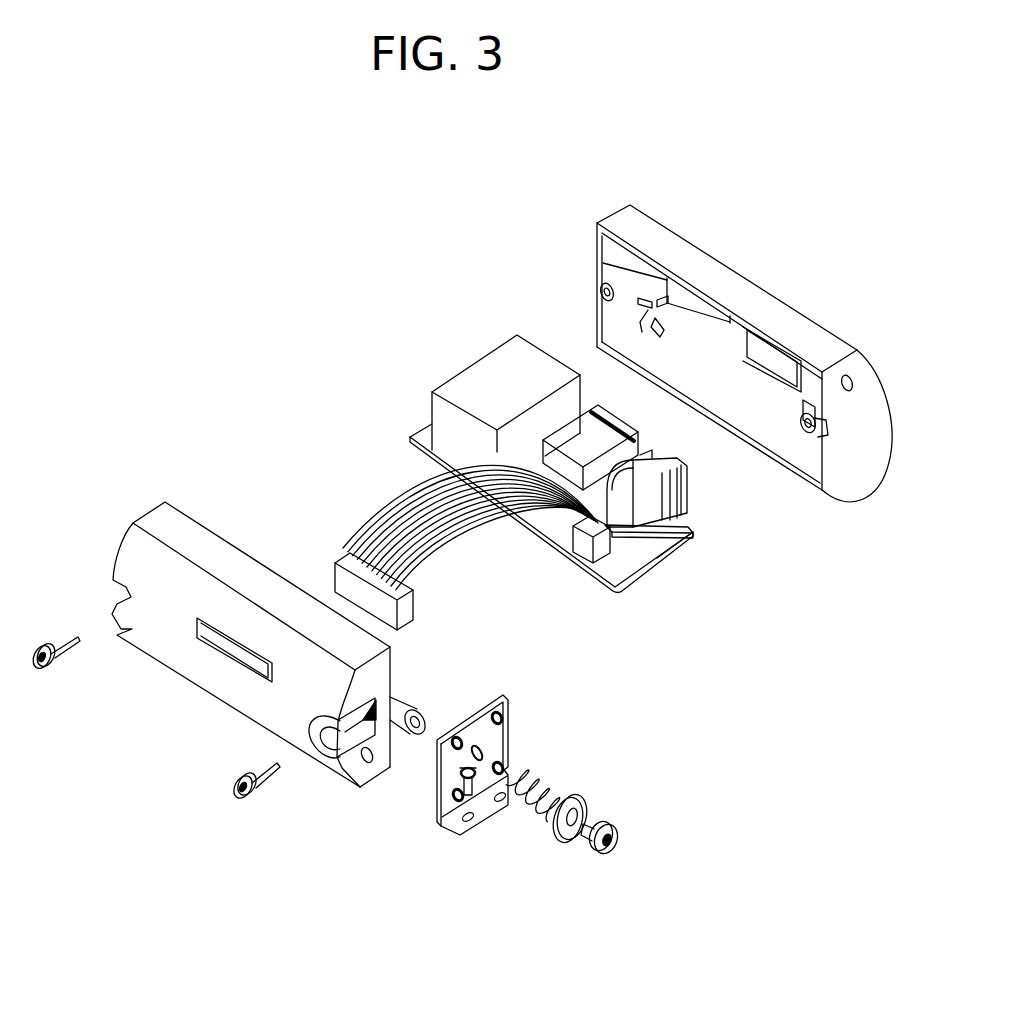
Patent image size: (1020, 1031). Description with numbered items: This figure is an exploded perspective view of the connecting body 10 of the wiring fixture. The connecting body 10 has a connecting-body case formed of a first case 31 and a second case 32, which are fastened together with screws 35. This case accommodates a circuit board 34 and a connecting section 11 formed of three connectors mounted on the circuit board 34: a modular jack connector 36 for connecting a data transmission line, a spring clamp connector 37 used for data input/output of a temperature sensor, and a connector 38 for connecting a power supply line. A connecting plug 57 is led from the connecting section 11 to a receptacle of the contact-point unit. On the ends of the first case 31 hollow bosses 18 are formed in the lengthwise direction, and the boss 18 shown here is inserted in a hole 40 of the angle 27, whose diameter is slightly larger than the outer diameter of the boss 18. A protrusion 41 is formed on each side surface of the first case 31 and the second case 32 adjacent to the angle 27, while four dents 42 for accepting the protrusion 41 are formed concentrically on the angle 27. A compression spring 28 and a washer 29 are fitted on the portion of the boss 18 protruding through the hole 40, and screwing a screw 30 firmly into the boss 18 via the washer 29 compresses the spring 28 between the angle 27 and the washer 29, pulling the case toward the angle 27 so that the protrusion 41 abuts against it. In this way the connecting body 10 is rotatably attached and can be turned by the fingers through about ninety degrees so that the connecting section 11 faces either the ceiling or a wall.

The connecting body 10 is at (268, 267).
The connecting section 11 is at (642, 520).
The hollow boss 18 is at (400, 710).
The angle 27 is at (497, 740).
The compression spring 28 is at (533, 812).
The washer 29 is at (565, 833).
The screw 30 is at (605, 855).
The first case 31 is at (177, 532).
The second case 32 is at (682, 257).
The circuit board 34 is at (628, 560).
The screws 35 is at (65, 651).
The modular jack connector 36 is at (507, 367).
The spring clamp connector 37 is at (587, 437).
The connector 38 is at (650, 498).
The hole 40 is at (482, 750).
The protrusion 41 is at (853, 372).
The dents 42 is at (497, 718).
The connecting plug 57 is at (412, 610).